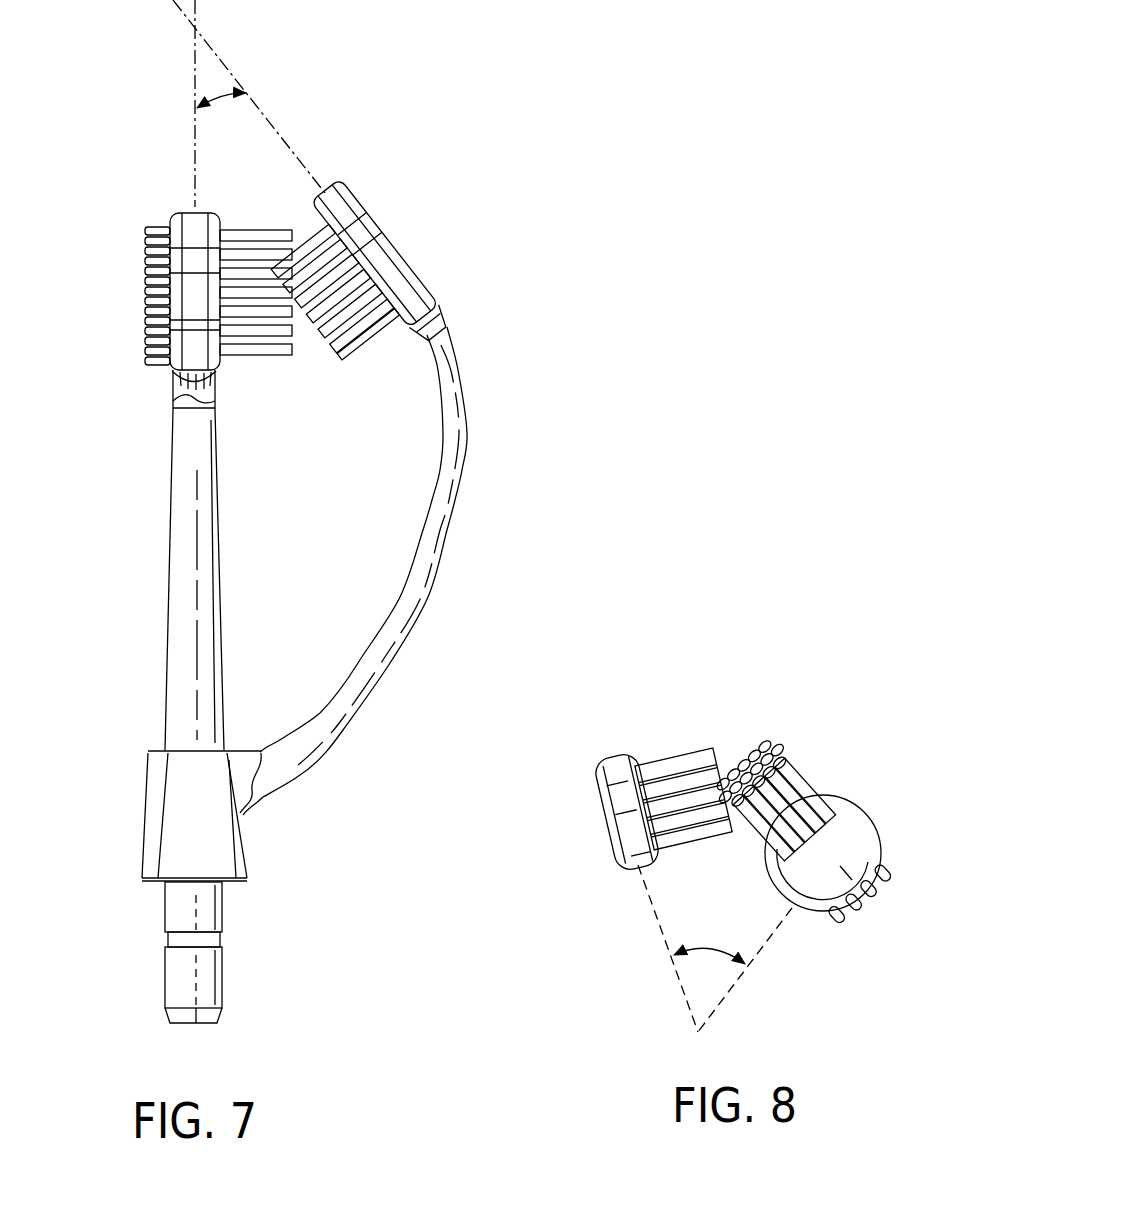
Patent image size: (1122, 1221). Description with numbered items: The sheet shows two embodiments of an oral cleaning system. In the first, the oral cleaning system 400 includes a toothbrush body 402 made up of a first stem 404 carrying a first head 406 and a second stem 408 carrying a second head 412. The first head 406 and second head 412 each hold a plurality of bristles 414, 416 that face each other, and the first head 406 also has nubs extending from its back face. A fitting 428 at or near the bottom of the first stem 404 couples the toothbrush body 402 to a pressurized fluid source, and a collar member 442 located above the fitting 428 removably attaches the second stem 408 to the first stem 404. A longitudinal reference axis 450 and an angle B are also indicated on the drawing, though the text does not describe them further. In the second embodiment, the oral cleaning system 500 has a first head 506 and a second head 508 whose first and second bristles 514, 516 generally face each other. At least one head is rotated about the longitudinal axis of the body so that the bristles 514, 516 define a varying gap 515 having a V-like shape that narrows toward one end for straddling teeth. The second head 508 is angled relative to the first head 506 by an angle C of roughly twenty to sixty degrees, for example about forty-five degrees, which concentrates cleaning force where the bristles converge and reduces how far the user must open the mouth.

In FIG. 7, the oral cleaning system 400 is at (518, 326).
In FIG. 7, the toothbrush body 402 is at (374, 818).
In FIG. 7, the first stem 404 is at (187, 566).
In FIG. 7, the first head 406 is at (176, 376).
In FIG. 7, the second stem 408 is at (441, 497).
In FIG. 7, the second head 412 is at (383, 253).
In FIG. 7, the bristles 414 is at (262, 342).
In FIG. 7, the bristles 416 is at (353, 320).
In FIG. 7, the fitting 428 is at (221, 938).
In FIG. 7, the collar member 442 is at (190, 808).
In FIG. 7, the longitudinal axis 450 is at (195, 58).
In FIG. 7, the angle B is at (221, 90).
In FIG. 8, the oral cleaning system 500 is at (784, 689).
In FIG. 8, the first head 506 is at (860, 835).
In FIG. 8, the first brush head 508 is at (615, 800).
In FIG. 8, the bristles 514 is at (790, 797).
In FIG. 8, the varying gap 515 is at (722, 762).
In FIG. 8, the bristles 516 is at (668, 782).
In FIG. 8, the angle C is at (715, 948).